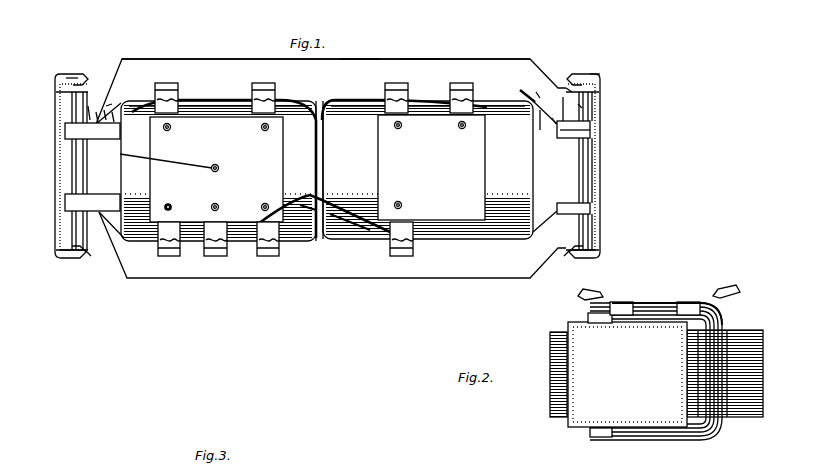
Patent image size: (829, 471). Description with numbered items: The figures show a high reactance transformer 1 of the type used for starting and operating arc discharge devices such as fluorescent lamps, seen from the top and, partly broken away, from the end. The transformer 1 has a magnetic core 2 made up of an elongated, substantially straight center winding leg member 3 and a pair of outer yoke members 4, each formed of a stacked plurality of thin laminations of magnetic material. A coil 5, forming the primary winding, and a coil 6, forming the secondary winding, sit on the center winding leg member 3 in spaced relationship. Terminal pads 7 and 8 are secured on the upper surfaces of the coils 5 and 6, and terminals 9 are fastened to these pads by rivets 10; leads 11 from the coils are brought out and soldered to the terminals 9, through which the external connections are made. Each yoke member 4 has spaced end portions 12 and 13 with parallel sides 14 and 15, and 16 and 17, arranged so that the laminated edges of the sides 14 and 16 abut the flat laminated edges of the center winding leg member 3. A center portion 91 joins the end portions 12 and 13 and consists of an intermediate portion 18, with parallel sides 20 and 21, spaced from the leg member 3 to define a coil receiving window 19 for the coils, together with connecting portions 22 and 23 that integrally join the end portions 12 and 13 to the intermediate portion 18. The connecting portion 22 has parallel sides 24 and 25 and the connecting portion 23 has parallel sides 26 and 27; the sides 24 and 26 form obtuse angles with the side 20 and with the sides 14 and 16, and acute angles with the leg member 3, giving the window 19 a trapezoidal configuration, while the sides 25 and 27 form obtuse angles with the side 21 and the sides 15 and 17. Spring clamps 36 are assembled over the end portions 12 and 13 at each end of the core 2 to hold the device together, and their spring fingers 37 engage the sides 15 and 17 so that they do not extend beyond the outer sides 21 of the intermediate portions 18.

In FIG. 1, the high reactance transformer 1 is at (510, 50).
In FIG. 2, the high reactance transformer 1 is at (686, 286).
In FIG. 1, the magnetic core 2 is at (582, 82).
In FIG. 2, the magnetic core 2 is at (728, 318).
In FIG. 1, the center winding leg member 3 is at (596, 133).
In FIG. 2, the center winding leg member 3 is at (700, 410).
In FIG. 1, the outer yoke member 4 is at (460, 72).
In FIG. 2, the outer yoke member 4 is at (551, 388).
In FIG. 1, the coil 5 is at (300, 227).
In FIG. 1, the coil 6 is at (352, 228).
In FIG. 1, the terminal pad 7 is at (208, 130).
In FIG. 1, the terminal pad 8 is at (423, 142).
In FIG. 2, the terminal pad 8 is at (640, 302).
In FIG. 1, the terminal 9 is at (168, 82).
In FIG. 2, the terminal 9 is at (586, 296).
In FIG. 1, the rivet 10 is at (170, 125).
In FIG. 1, the lead 11 is at (141, 112).
In FIG. 2, the lead 11 is at (740, 294).
In FIG. 1, the spaced end portion 12 is at (88, 108).
In FIG. 1, the spaced end portion 13 is at (584, 106).
In FIG. 1, the side 14 is at (97, 114).
In FIG. 1, the side 15 is at (72, 74).
In FIG. 1, the side 16 is at (568, 90).
In FIG. 1, the side 17 is at (604, 72).
In FIG. 1, the intermediate portion 18 is at (356, 72).
In FIG. 1, the coil receiving window 19 is at (313, 100).
In FIG. 1, the side 20 is at (232, 103).
In FIG. 1, the side 21 is at (258, 58).
In FIG. 1, the connecting portion 22 is at (112, 114).
In FIG. 1, the connecting portion 23 is at (552, 120).
In FIG. 1, the side 24 is at (106, 108).
In FIG. 1, the side 25 is at (106, 112).
In FIG. 1, the side 26 is at (544, 130).
In FIG. 1, the side 27 is at (537, 92).
In FIG. 1, the spring clamp 36 is at (55, 178).
In FIG. 2, the spring clamp 36 is at (598, 340).
In FIG. 1, the spring finger 37 is at (79, 262).
In FIG. 2, the spring finger 37 is at (590, 318).
In FIG. 1, the center portion 91 is at (425, 60).